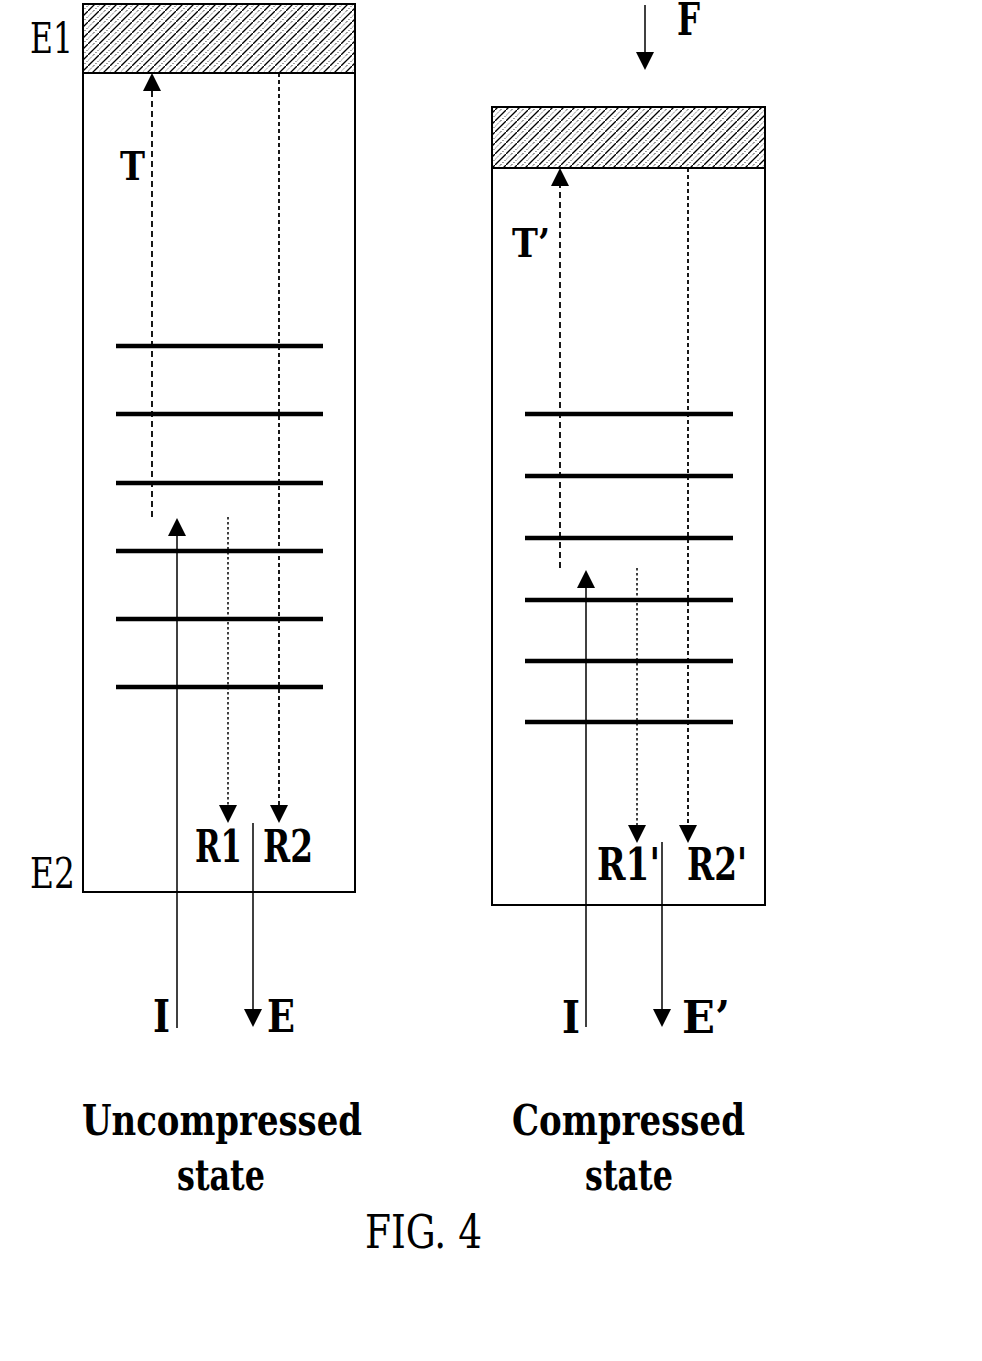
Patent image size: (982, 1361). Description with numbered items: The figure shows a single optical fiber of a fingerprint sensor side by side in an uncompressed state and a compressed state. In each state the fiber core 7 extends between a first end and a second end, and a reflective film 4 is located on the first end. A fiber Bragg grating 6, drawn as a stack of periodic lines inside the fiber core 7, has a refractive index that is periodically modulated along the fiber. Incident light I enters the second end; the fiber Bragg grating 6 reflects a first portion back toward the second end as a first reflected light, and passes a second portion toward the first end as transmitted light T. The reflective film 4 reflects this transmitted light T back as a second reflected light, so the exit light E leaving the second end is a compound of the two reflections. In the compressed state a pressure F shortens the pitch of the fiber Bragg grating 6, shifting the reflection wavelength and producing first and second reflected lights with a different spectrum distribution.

The reflective film 4 is at (424, 86).
The fiber Bragg grating 6 is at (222, 480).
The fiber core 7 is at (322, 780).